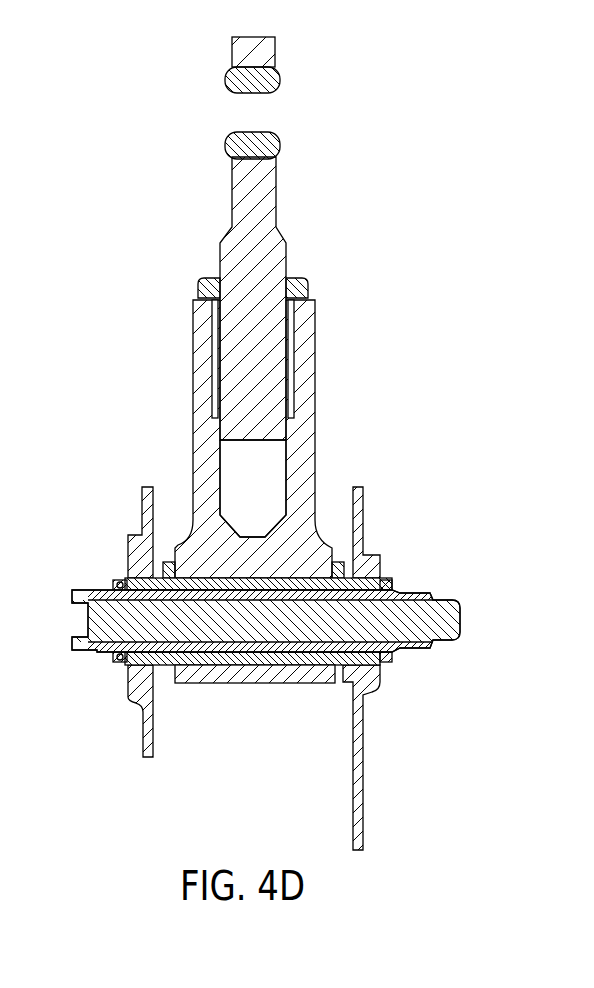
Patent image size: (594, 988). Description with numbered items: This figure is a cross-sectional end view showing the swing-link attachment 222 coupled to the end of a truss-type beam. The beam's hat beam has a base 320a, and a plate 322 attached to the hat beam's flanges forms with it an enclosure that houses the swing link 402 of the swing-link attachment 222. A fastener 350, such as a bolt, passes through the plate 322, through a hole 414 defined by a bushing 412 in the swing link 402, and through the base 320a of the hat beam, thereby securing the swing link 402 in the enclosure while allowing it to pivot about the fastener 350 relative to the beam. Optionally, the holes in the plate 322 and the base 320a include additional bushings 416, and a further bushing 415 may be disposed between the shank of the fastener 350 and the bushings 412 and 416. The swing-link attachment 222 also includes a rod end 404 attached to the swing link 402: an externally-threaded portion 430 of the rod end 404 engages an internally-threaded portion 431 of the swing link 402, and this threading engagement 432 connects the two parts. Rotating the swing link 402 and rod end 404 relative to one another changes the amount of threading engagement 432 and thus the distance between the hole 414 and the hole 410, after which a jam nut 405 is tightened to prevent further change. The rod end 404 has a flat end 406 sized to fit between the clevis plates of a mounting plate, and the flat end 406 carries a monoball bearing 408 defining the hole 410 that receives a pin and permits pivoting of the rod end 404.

The swing-link attachment 222 is at (370, 334).
The base 320a is at (365, 762).
The plate 322 is at (142, 722).
The fastener 350 is at (465, 621).
The swing link 402 is at (300, 470).
The rod end 404 is at (268, 238).
The jam nut 405 is at (312, 292).
The flat end 406 is at (266, 54).
The monoball bearing 408 is at (280, 147).
The hole 410 is at (258, 108).
The bushing 412 is at (212, 578).
The hole 414 is at (240, 685).
The additional bushing 415 is at (125, 658).
The additional bushings 416 is at (167, 560).
The externally-threaded portion 430 is at (270, 430).
The internally-threaded portion 431 is at (233, 467).
The threading engagement 432 is at (291, 378).